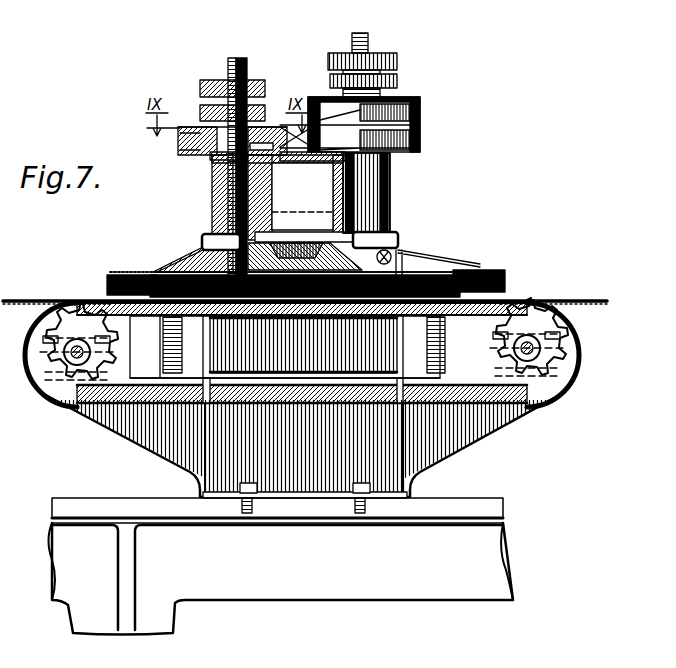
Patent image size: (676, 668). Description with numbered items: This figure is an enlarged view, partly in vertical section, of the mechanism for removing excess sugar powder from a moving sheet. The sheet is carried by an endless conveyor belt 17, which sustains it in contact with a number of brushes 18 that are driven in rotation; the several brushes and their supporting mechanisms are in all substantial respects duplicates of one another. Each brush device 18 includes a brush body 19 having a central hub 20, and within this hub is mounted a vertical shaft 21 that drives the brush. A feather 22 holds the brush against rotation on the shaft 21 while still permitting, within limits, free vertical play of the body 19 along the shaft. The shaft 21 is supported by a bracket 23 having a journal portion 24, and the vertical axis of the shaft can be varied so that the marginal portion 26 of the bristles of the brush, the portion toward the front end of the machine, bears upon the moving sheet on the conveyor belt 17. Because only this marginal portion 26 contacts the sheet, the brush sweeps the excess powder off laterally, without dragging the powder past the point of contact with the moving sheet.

The endless conveyor belt 17 is at (565, 350).
The brushes 18 is at (135, 275).
The brush body 19 is at (178, 262).
The central hub 20 is at (213, 238).
The vertical shaft 21 is at (247, 193).
The feather 22 is at (255, 130).
The bracket 23 is at (325, 178).
The journal portion 24 is at (357, 192).
The marginal portion of the bristles 26 is at (110, 278).